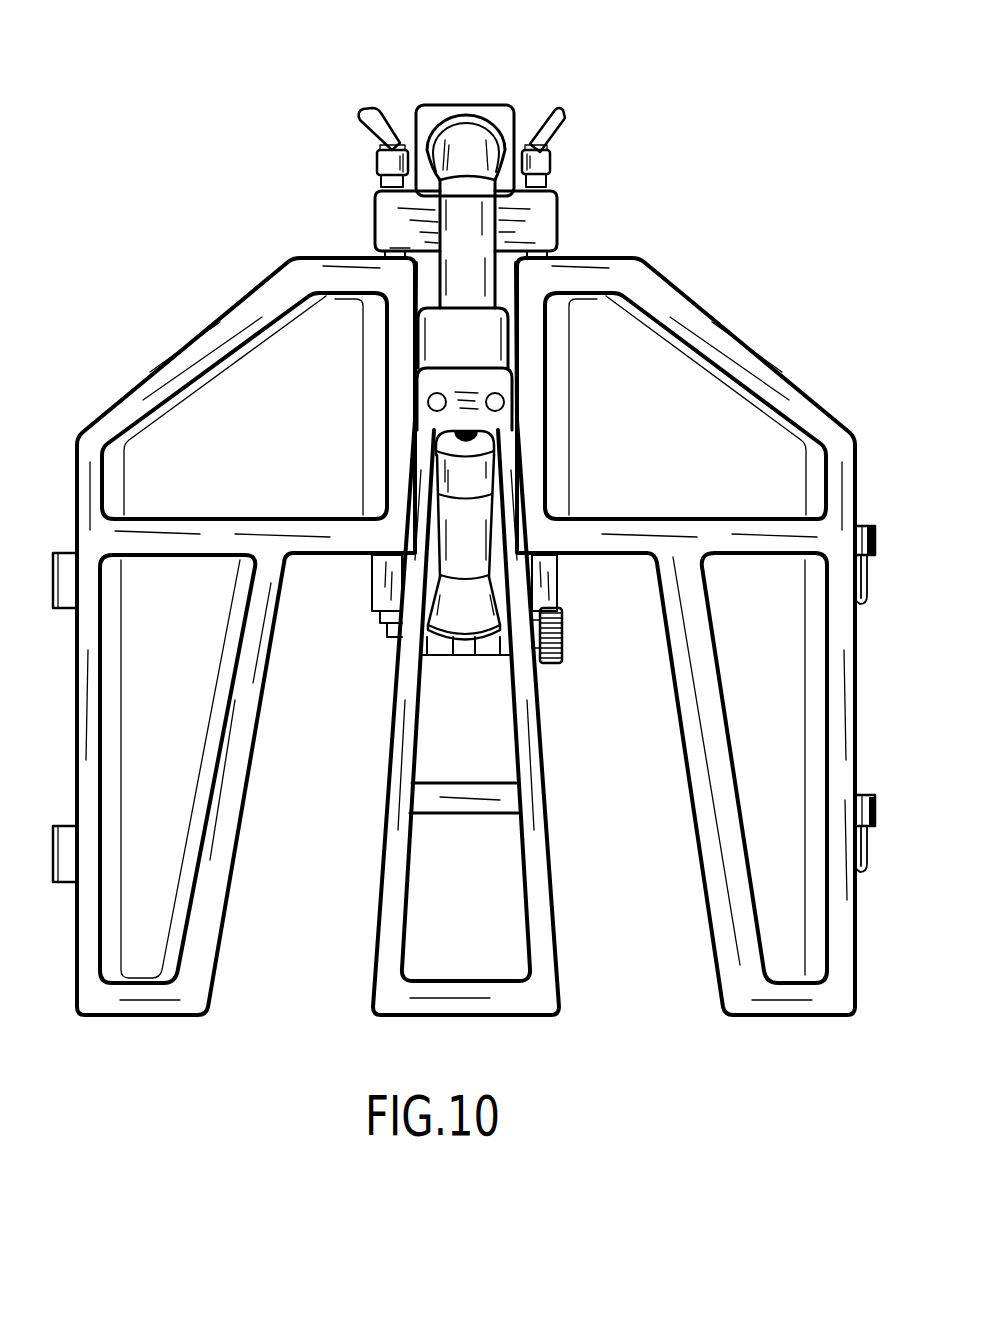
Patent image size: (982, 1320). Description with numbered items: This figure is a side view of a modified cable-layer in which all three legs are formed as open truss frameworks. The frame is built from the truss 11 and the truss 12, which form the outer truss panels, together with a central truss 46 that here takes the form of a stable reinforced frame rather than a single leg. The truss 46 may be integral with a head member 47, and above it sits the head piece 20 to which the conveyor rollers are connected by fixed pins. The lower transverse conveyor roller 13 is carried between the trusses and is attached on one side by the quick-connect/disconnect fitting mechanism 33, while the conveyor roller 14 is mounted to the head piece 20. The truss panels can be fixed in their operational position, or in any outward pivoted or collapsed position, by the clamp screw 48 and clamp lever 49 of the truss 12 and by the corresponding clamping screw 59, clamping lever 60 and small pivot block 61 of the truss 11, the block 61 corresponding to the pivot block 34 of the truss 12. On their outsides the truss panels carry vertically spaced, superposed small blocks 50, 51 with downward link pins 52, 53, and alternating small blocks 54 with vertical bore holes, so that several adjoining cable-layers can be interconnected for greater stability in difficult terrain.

The truss 11 is at (173, 342).
The truss 12 is at (829, 396).
The lower transverse conveyor roller 13 is at (503, 531).
The conveyor roller 14 is at (508, 238).
The head piece 20 is at (497, 110).
The quick-connect/disconnect fitting mechanism 33 is at (563, 635).
The pivot block 34 is at (536, 209).
The truss 46 is at (556, 865).
The head member 47 is at (500, 347).
The clamp screw 48 is at (551, 163).
The clamp lever 49 is at (563, 126).
The small block 50 is at (866, 526).
The small block 51 is at (860, 807).
The link pin 52 is at (860, 593).
The link pin 53 is at (867, 868).
The small block 54 is at (66, 608).
The clamping screw 59 is at (378, 166).
The clamping lever 60 is at (384, 113).
The small pivot block 61 is at (393, 219).